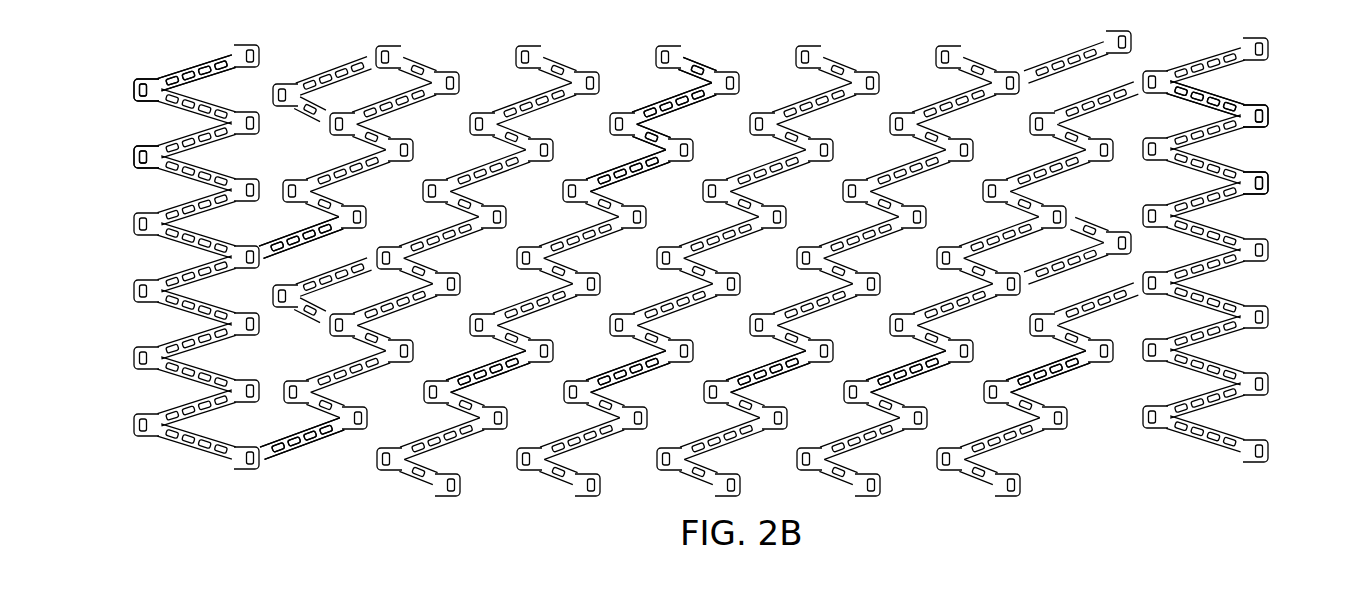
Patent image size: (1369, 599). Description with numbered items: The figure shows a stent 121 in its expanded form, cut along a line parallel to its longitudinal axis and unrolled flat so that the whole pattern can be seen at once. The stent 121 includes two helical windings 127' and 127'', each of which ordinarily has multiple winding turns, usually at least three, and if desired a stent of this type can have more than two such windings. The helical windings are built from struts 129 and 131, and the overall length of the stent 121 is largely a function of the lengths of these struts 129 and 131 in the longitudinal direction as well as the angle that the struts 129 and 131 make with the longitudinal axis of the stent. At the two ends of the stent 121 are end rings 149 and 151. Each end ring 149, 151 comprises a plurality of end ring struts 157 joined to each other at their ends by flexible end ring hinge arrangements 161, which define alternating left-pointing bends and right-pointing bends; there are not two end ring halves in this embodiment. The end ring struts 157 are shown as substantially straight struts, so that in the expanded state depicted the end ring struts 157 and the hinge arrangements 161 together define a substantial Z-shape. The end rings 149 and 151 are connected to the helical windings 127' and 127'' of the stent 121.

The stent 121 is at (706, 253).
The helical winding 127' is at (673, 325).
The helical winding 127'' is at (624, 428).
The strut 129 is at (686, 102).
The strut 131 is at (703, 65).
The end ring 149 is at (190, 64).
The end ring 151 is at (1207, 44).
The end ring strut 157 is at (205, 100).
The end ring hinge arrangement 161 is at (138, 80).